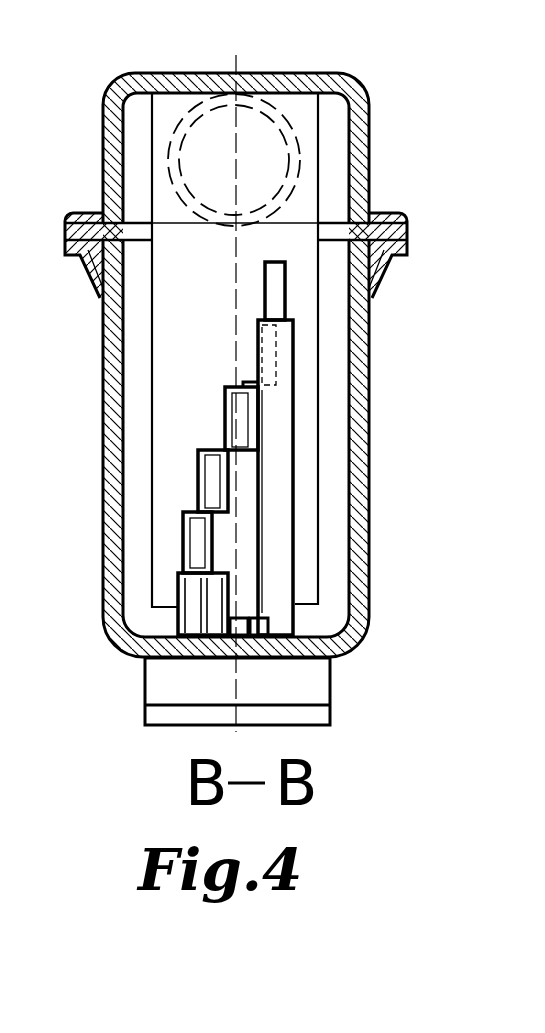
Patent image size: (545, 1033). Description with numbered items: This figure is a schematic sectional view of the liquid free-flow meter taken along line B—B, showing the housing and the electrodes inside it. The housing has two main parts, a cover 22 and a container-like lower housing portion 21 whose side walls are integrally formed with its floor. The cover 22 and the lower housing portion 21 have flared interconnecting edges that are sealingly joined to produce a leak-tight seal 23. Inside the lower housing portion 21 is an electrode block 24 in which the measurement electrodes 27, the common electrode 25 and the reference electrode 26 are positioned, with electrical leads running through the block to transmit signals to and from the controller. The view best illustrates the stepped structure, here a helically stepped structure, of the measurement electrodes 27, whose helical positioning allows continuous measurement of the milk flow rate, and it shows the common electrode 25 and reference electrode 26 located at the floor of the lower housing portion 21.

The lower housing portion 21 is at (360, 662).
The cover 22 is at (365, 115).
The leak-tight seal 23 is at (388, 257).
The electrode block 24 is at (362, 607).
The common electrode 25 is at (250, 617).
The reference electrode 26 is at (262, 617).
The measurement electrodes 27 is at (195, 545).